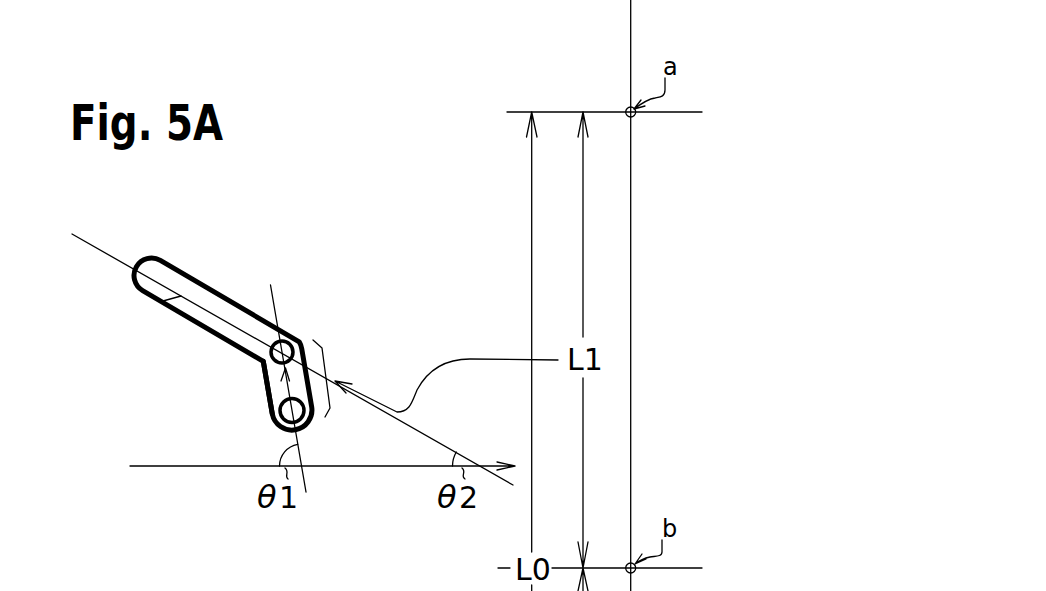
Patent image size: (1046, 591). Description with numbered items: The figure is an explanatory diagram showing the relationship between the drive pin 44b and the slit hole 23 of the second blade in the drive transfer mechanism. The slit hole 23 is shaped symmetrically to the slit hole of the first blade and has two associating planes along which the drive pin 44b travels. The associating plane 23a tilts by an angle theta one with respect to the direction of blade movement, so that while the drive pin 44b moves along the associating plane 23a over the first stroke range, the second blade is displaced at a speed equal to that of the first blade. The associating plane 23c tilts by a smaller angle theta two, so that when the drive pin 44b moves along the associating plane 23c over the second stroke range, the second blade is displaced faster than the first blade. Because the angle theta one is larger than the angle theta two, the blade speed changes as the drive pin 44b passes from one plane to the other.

The slit hole 23 is at (220, 318).
The associating plane 23a is at (267, 366).
The associating plane 23c is at (163, 300).
The drive pin 44b is at (287, 343).